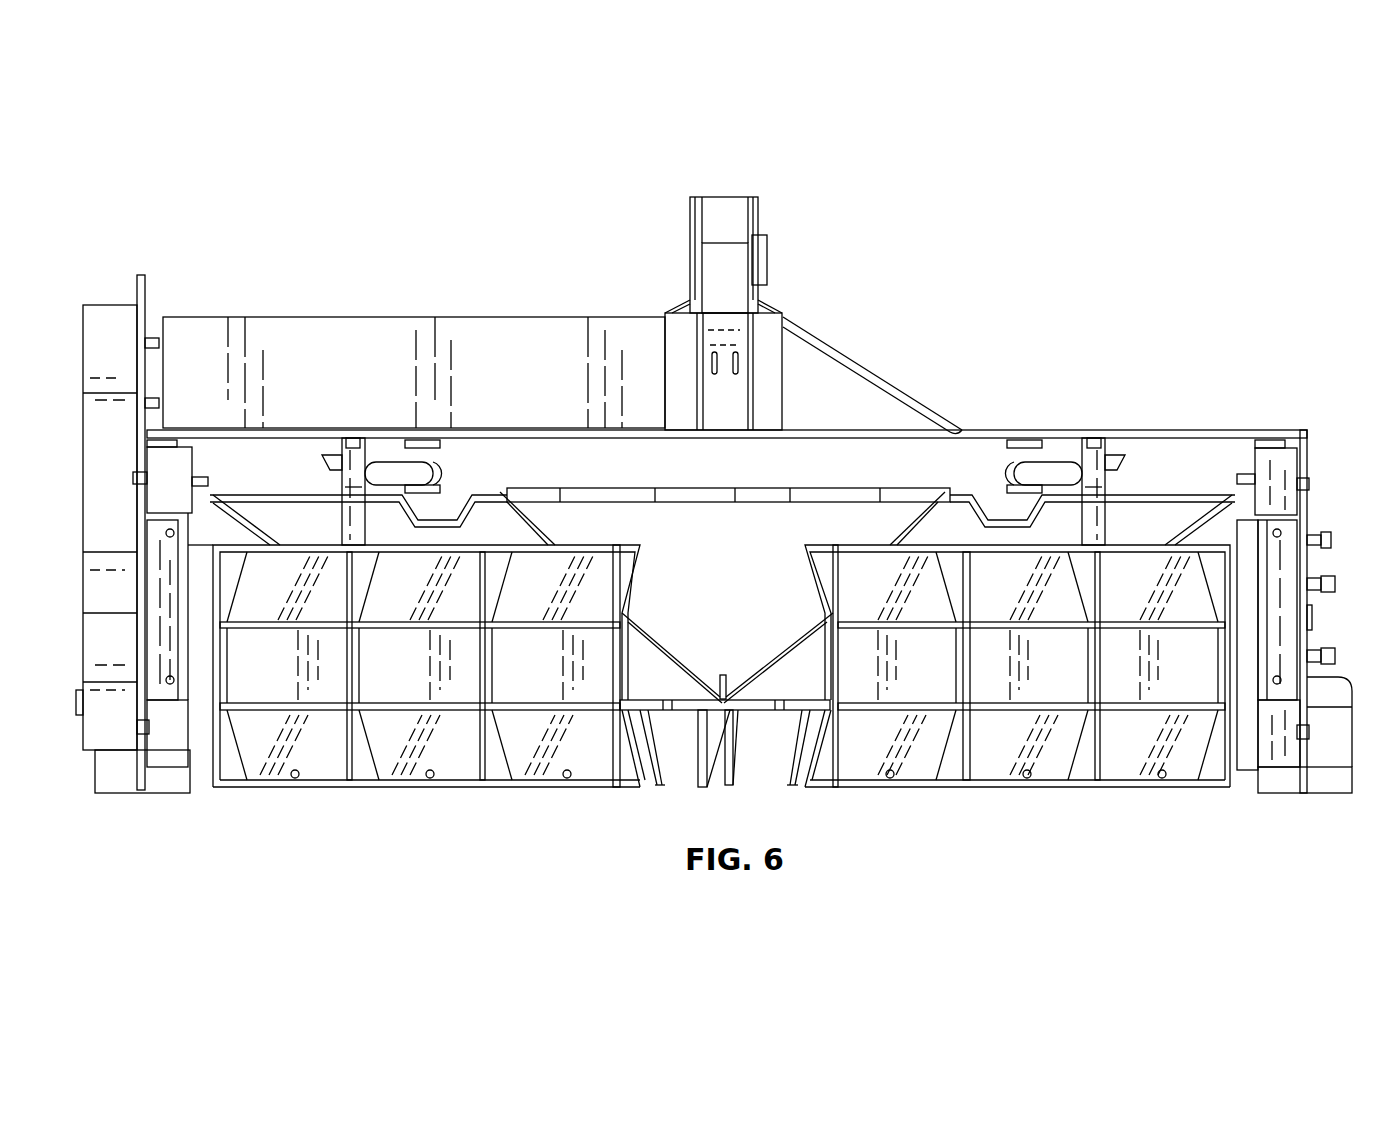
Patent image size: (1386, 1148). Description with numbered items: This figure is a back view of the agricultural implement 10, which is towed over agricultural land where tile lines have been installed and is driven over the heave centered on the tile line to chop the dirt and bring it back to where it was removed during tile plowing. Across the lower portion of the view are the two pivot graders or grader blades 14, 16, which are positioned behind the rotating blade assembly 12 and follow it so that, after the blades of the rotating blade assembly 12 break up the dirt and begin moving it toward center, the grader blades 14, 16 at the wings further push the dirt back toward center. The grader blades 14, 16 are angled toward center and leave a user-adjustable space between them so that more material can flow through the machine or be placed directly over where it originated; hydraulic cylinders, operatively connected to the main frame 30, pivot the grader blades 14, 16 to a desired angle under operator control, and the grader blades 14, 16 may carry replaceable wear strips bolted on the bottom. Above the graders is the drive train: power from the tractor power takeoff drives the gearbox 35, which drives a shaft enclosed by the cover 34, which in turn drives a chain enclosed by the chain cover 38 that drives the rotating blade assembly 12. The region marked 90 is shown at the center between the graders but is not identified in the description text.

The agricultural implement 10 is at (1318, 162).
The rotating blade assembly 12 is at (692, 733).
The grader blade 14 is at (1048, 768).
The grader blade 16 is at (400, 770).
The main frame 30 is at (1085, 430).
The cover 34 is at (461, 345).
The gearbox 35 is at (775, 418).
The chain cover 38 is at (100, 592).
The funnel 90 is at (807, 567).